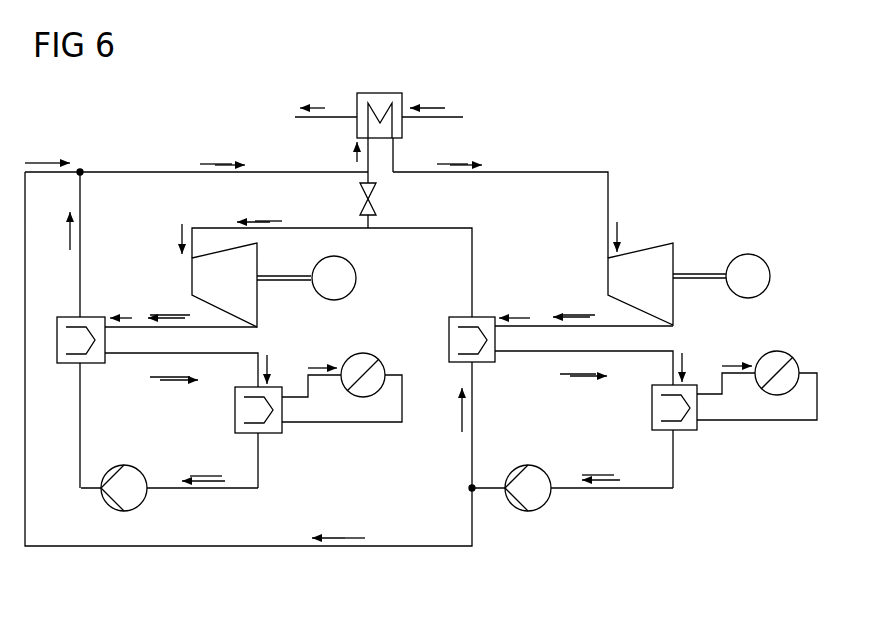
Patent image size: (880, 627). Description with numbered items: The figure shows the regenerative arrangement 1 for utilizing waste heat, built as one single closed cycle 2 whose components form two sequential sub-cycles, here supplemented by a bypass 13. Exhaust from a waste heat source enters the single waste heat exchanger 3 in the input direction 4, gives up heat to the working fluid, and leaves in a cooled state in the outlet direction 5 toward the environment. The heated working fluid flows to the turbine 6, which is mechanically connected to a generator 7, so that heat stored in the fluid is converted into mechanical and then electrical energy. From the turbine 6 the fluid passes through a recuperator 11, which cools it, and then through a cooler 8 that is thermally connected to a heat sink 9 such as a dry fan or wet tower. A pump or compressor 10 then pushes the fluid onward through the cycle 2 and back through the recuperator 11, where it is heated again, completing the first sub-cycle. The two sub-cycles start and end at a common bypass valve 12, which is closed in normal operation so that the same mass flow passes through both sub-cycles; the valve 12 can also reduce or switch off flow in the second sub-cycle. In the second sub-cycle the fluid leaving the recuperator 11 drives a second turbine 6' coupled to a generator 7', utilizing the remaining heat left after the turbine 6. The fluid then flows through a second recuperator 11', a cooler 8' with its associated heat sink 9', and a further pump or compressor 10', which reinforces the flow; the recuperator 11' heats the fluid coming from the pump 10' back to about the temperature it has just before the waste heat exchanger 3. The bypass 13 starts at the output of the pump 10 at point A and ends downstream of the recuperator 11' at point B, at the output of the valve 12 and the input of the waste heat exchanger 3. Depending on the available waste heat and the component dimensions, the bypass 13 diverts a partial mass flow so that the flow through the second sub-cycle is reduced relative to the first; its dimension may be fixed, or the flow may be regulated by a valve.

The regenerative arrangement 1 is at (715, 126).
The cycle 2 is at (736, 499).
The waste heat exchanger 3 is at (395, 91).
The input direction 4 is at (456, 114).
The heat supply outlet 5 is at (338, 114).
The turbine 6 is at (640, 256).
The generator 7 is at (721, 243).
The cooler 8 is at (647, 436).
The heat sink 9 is at (757, 355).
The pump or compressor 10 is at (589, 457).
The recuperator 11 is at (565, 322).
The bypass valve 12 is at (362, 196).
The bypass 13 is at (178, 548).
The second turbine 6' is at (196, 275).
The generator 7' is at (336, 278).
The cooler 8' is at (230, 437).
The cooling circuit pump of second circuit 9' is at (342, 356).
The pump or compressor 10' is at (169, 458).
The second recuperator 11' is at (162, 323).
The point A is at (474, 486).
The point B is at (80, 170).